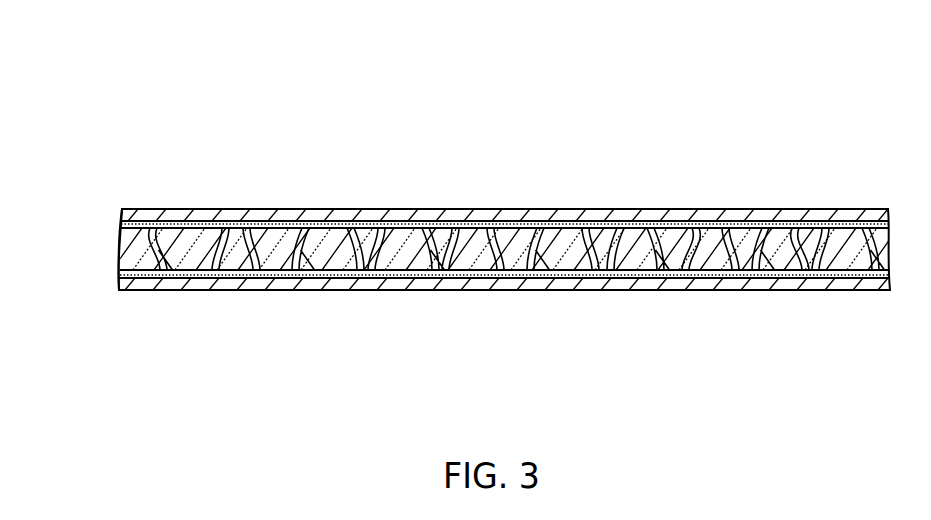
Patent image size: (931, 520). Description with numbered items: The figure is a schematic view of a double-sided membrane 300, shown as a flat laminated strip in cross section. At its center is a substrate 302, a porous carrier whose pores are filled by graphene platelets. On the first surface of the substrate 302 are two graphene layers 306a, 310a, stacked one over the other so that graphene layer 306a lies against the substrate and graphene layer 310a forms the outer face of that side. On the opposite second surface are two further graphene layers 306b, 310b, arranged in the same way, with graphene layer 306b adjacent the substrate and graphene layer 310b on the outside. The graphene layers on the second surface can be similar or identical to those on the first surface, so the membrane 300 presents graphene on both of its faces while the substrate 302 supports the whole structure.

The membrane 300 is at (727, 167).
The substrate 302 is at (128, 246).
The graphene layer 306a is at (358, 208).
The graphene layer 306b is at (372, 291).
The graphene layer 310a is at (238, 208).
The graphene layer 310b is at (253, 291).